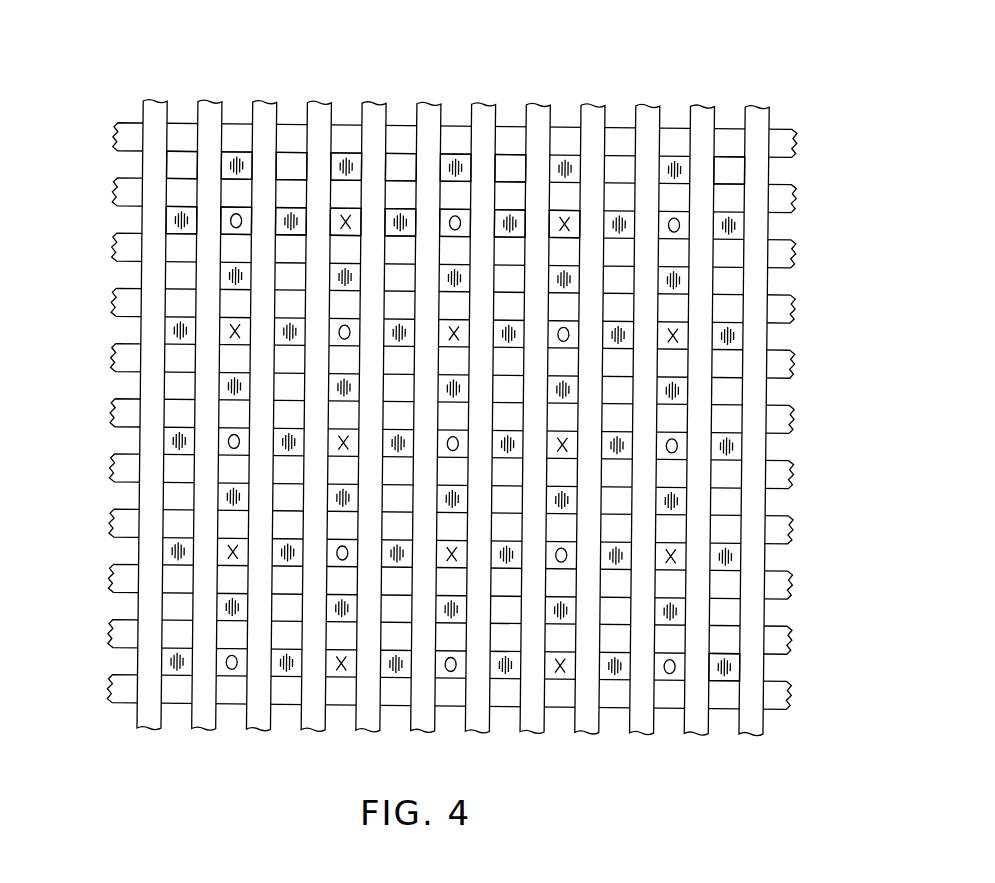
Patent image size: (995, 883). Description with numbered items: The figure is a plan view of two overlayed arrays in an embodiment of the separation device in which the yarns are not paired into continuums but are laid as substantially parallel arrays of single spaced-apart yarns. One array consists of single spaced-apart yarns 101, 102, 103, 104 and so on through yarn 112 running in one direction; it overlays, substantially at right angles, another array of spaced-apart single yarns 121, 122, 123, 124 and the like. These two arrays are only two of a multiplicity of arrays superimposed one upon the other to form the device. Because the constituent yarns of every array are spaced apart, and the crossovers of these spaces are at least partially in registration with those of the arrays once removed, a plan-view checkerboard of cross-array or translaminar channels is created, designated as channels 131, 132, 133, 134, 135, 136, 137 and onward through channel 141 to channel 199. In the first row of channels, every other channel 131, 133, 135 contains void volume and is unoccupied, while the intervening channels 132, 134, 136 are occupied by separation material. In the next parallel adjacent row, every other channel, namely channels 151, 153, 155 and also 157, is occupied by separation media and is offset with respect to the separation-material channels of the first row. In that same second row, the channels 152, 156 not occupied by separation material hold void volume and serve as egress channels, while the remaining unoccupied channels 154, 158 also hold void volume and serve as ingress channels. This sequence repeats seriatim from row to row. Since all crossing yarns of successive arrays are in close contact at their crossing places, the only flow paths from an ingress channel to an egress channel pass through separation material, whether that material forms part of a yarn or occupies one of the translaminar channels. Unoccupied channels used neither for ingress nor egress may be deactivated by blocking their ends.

The spaced-apart yarn 101 is at (153, 105).
The spaced-apart yarn 102 is at (208, 104).
The spaced-apart yarn 103 is at (267, 105).
The spaced-apart yarn 104 is at (320, 104).
The spaced-apart yarn 112 is at (762, 112).
The spaced-apart single yarn 121 is at (787, 144).
The spaced-apart single yarn 122 is at (788, 201).
The spaced-apart single yarn 123 is at (788, 256).
The spaced-apart single yarn 124 is at (788, 311).
The translaminar channel 131 is at (180, 163).
The translaminar channel 132 is at (237, 163).
The translaminar channel 133 is at (288, 163).
The translaminar channel 134 is at (344, 167).
The translaminar channel 135 is at (401, 163).
The translaminar channel 136 is at (456, 165).
The translaminar channel 137 is at (511, 165).
The translaminar channel 141 is at (725, 167).
The translaminar channel 151 is at (168, 221).
The egress channel 152 is at (221, 231).
The translaminar channel 153 is at (277, 231).
The ingress channel 154 is at (337, 234).
The translaminar channel 155 is at (393, 224).
The egress channel 156 is at (452, 222).
The translaminar channel 157 is at (508, 222).
The ingress channel 158 is at (561, 222).
The translaminar channel 199 is at (725, 678).